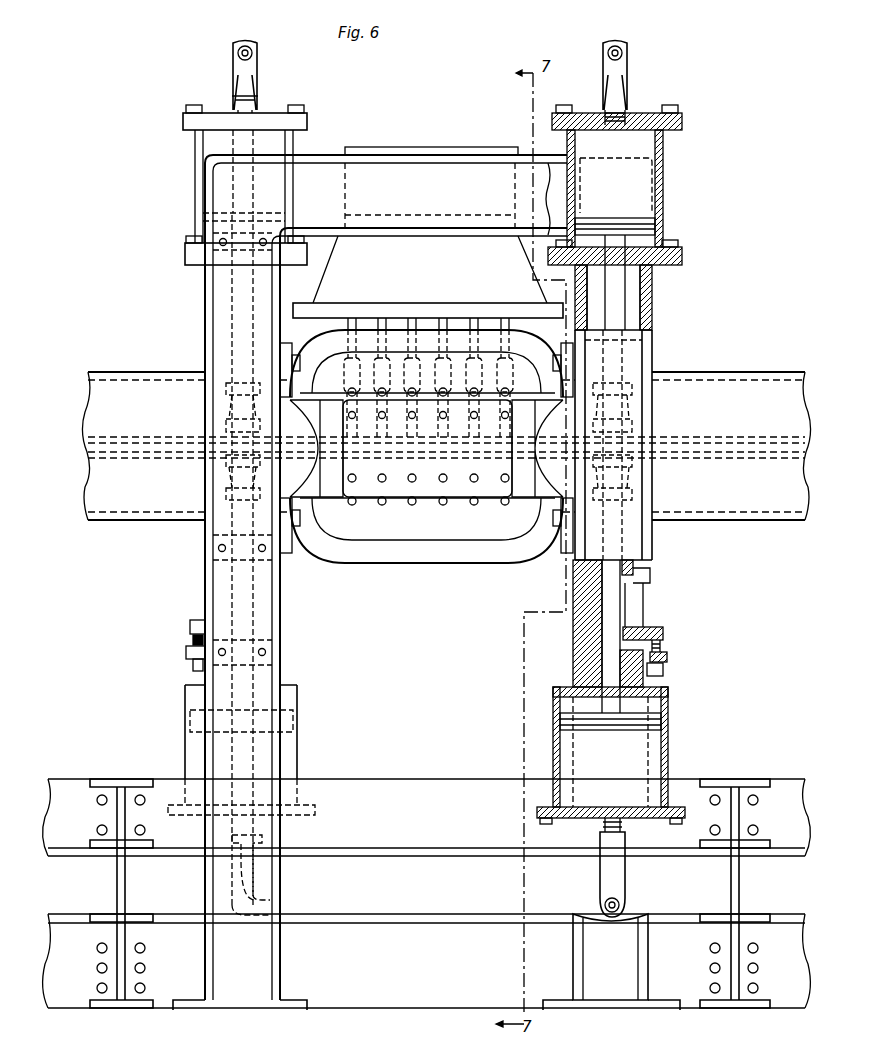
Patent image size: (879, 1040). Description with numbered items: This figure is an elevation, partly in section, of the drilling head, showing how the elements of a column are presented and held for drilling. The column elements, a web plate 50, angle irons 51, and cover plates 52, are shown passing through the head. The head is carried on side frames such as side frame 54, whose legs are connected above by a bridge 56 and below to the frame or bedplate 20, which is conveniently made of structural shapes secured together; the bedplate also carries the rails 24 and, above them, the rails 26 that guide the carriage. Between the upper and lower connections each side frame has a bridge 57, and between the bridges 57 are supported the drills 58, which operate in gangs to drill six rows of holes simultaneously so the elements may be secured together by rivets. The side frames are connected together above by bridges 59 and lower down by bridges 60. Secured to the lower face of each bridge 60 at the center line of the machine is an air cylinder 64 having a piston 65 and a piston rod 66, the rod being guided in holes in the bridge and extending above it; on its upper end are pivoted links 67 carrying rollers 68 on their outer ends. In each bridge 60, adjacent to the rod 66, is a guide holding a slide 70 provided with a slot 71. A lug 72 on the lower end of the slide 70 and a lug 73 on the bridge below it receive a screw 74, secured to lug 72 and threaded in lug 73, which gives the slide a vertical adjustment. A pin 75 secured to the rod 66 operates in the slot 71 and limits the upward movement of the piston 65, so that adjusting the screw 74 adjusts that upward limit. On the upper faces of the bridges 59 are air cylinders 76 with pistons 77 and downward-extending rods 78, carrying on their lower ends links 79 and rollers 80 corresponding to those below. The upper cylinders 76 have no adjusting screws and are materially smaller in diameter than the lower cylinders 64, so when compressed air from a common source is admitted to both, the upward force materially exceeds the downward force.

The frame or bedplate 20 is at (430, 893).
The rails 24 is at (403, 900).
The rails 26 is at (395, 832).
The web plate 50 is at (145, 447).
The angle irons 51 is at (134, 378).
The cover plates 52 is at (731, 446).
The side frame 54 is at (205, 360).
The bridge 56 is at (320, 157).
The bridge 57 is at (330, 483).
The drills 58 is at (412, 492).
The bridges 59 is at (205, 312).
The bridges 60 is at (218, 578).
The air cylinder 64 is at (300, 762).
The piston 65 is at (300, 722).
The piston rod 66 is at (282, 669).
The links 67 is at (224, 483).
The rollers 68 is at (224, 463).
The slide 70 is at (655, 563).
The slot 71 is at (633, 603).
The lug 72 is at (193, 626).
The lug 73 is at (191, 652).
The screw 74 is at (193, 640).
The pin 75 is at (642, 575).
The air cylinders 76 is at (198, 153).
The pistons 77 is at (257, 217).
The rods 78 is at (260, 293).
The links 79 is at (226, 412).
The rollers 80 is at (224, 436).